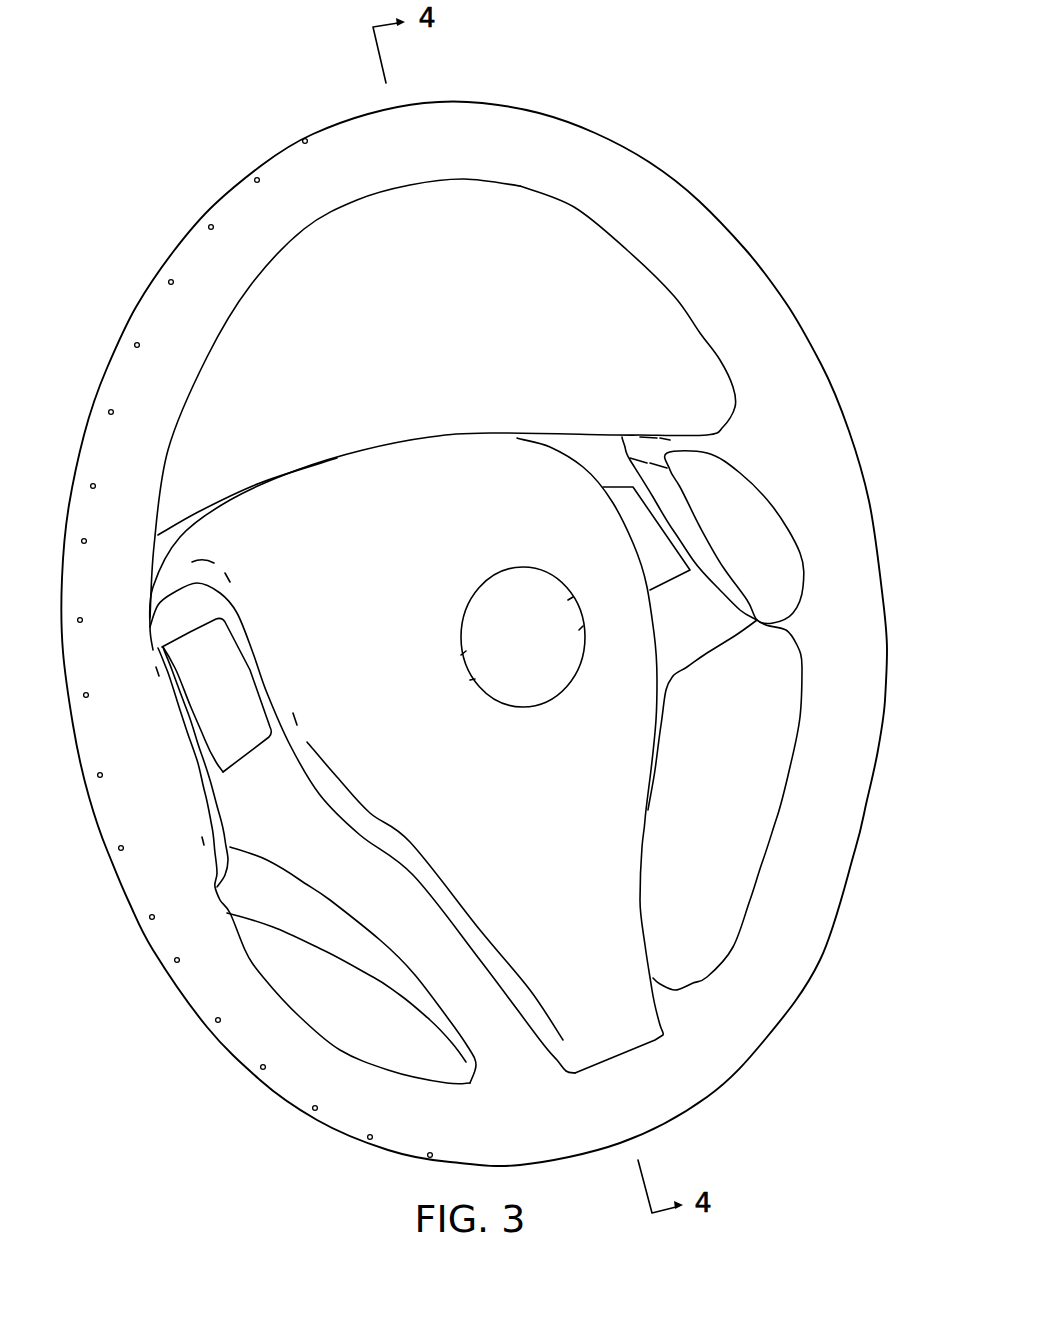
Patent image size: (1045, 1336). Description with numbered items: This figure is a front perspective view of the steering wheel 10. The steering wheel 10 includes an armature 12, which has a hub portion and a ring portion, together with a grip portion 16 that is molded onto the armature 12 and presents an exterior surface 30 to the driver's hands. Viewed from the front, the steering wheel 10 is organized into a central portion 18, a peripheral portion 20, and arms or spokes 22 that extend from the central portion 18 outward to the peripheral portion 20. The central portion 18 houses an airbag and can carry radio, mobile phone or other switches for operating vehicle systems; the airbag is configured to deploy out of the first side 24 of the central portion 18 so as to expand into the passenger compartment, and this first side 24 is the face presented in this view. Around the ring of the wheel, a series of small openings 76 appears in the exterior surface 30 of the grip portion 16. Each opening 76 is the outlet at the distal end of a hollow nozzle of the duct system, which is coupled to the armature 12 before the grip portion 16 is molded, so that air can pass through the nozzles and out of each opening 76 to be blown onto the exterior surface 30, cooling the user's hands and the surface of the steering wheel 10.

The steering wheel 10 is at (672, 174).
The armature 12 is at (593, 455).
The grip portion 16 is at (741, 296).
The central portion 18 is at (440, 472).
The peripheral portion 20 is at (866, 494).
The arms or spokes 22 is at (723, 640).
The first side 24 is at (573, 787).
The exterior surface 30 is at (198, 255).
The opening 76 is at (137, 345).